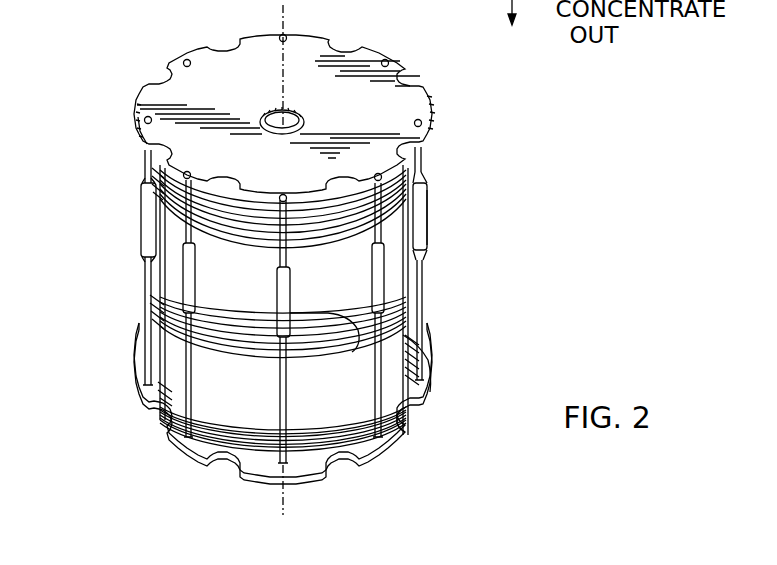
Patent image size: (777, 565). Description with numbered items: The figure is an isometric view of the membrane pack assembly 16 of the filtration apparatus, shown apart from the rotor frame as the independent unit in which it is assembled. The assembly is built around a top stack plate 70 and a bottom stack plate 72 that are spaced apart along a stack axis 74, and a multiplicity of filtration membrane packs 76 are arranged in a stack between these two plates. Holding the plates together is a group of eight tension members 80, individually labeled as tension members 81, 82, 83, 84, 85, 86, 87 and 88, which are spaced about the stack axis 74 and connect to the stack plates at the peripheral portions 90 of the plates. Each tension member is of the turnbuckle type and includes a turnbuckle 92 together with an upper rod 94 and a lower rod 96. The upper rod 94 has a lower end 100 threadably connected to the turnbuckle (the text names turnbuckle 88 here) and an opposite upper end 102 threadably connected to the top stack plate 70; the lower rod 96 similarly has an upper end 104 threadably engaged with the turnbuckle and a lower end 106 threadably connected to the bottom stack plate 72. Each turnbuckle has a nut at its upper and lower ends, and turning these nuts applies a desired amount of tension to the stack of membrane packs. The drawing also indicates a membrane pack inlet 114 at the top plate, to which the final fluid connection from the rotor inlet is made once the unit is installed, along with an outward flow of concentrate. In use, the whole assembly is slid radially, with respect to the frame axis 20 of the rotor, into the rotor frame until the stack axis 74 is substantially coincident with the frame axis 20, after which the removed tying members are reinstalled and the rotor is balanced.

The membrane pack assembly 16 is at (440, 102).
The frame axis 20 is at (479, 12).
The top stack plate 70 is at (137, 95).
The bottom stack plate 72 is at (165, 442).
The stack axis 74 is at (287, 483).
The filtration membrane packs 76 is at (183, 248).
The tension members 80 is at (140, 208).
The tension member 81 is at (388, 273).
The tension member 82 is at (424, 327).
The tension member 83 is at (144, 318).
The tension member 84 is at (143, 120).
The tension member 85 is at (185, 59).
The tension member 86 is at (282, 34).
The tension member 87 is at (388, 60).
The tension member 88 is at (428, 208).
The peripheral portions 90 is at (145, 135).
The turnbuckle 92 is at (429, 222).
The upper rod 94 is at (424, 160).
The lower rod 96 is at (428, 346).
The lower end 100 is at (424, 173).
The upper end 102 is at (425, 123).
The upper end 104 is at (428, 256).
The lower end 106 is at (435, 372).
The membrane pack inlet 114 is at (290, 112).